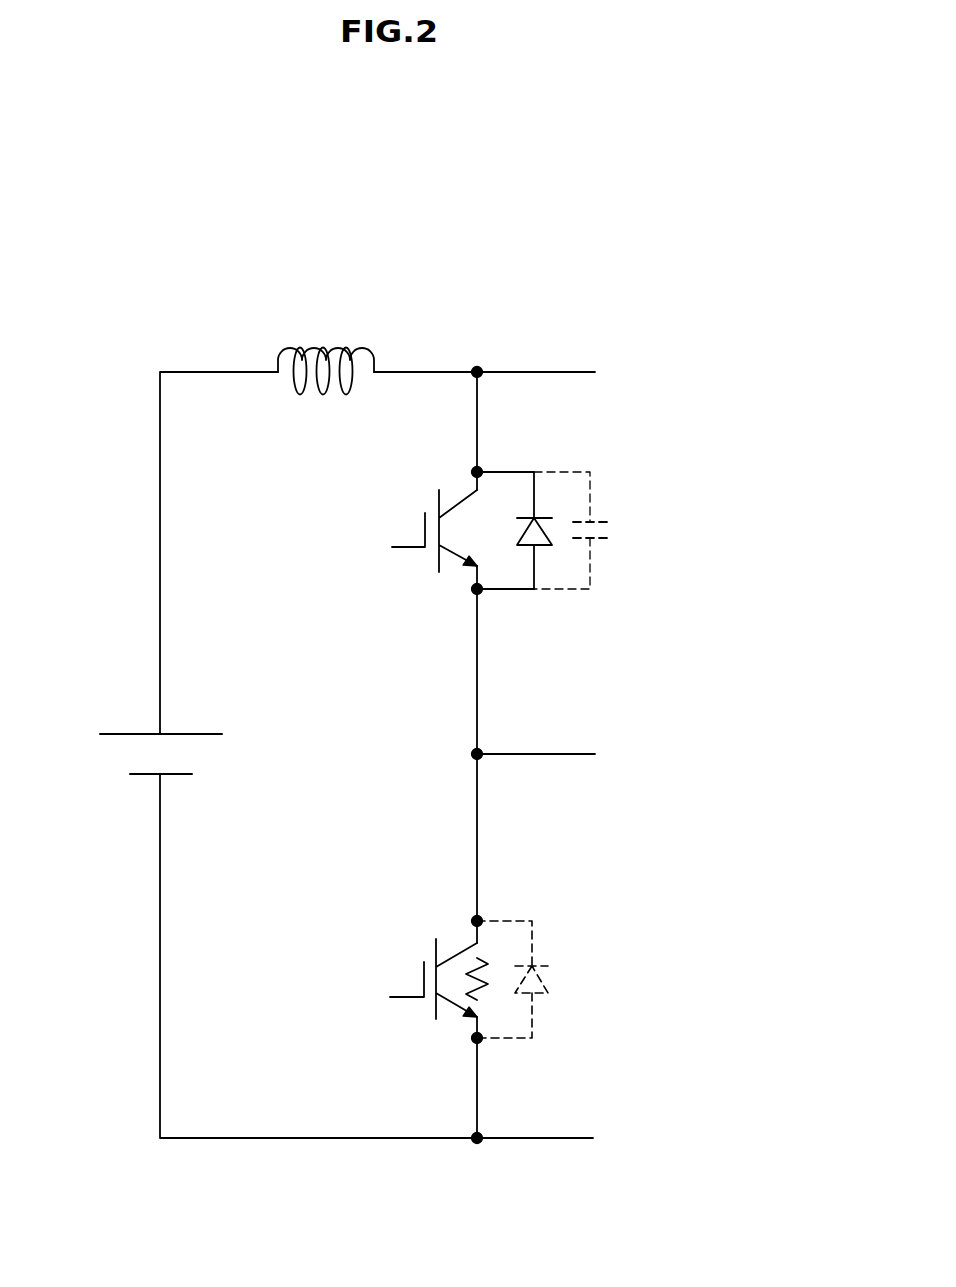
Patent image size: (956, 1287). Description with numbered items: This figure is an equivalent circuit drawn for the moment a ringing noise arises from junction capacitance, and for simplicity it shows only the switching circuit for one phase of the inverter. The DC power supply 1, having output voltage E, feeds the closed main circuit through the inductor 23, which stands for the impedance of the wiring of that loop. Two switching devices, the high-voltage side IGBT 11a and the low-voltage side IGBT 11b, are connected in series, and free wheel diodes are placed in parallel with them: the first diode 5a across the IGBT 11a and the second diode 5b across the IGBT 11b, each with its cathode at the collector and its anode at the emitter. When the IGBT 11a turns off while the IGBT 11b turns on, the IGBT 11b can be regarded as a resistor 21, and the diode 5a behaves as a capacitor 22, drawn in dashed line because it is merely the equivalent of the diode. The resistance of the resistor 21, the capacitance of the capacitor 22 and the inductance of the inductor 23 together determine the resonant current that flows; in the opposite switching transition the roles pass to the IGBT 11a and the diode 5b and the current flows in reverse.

The DC power supply 1 is at (102, 753).
The inductor 23 is at (322, 348).
The high-voltage side IGBT 11a is at (428, 496).
The low-voltage side IGBT 11b is at (427, 945).
The first diode 5a is at (540, 548).
The second diode 5b is at (548, 978).
The capacitor 22 is at (584, 558).
The resistor 21 is at (482, 958).